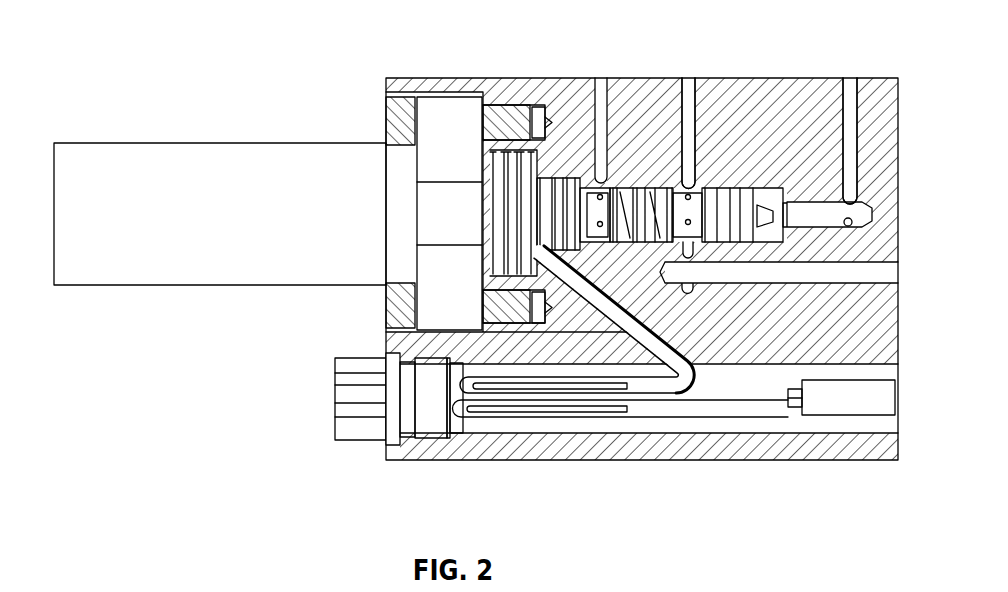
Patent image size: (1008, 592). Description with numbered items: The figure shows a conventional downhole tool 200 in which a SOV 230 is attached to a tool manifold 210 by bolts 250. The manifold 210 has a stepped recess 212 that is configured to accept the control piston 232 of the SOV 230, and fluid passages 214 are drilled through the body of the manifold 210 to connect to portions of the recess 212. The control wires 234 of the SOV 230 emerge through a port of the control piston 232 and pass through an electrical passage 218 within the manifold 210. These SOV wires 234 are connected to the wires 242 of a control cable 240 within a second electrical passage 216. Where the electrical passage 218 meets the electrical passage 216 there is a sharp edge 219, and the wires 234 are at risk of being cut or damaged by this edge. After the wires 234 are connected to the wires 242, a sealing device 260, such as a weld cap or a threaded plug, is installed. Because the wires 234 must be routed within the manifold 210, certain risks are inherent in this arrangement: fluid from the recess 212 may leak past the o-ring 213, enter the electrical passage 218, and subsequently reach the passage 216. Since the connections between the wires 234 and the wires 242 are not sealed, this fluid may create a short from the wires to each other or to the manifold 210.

The downhole tool 200 is at (115, 42).
The tool manifold 210 is at (774, 131).
The stepped recess 212 is at (584, 182).
The o-ring 213 is at (563, 178).
The fluid passages 214 is at (804, 266).
The electrical passage 216 is at (702, 419).
The electrical passage 218 is at (620, 332).
The sharp edge 219 is at (661, 337).
The SOV 230 is at (155, 257).
The control piston 232 is at (532, 158).
The control wires 234 is at (597, 284).
The control cable 240 is at (847, 407).
The wires 242 is at (772, 404).
The bolts 250 is at (393, 301).
The sealing device 260 is at (343, 397).